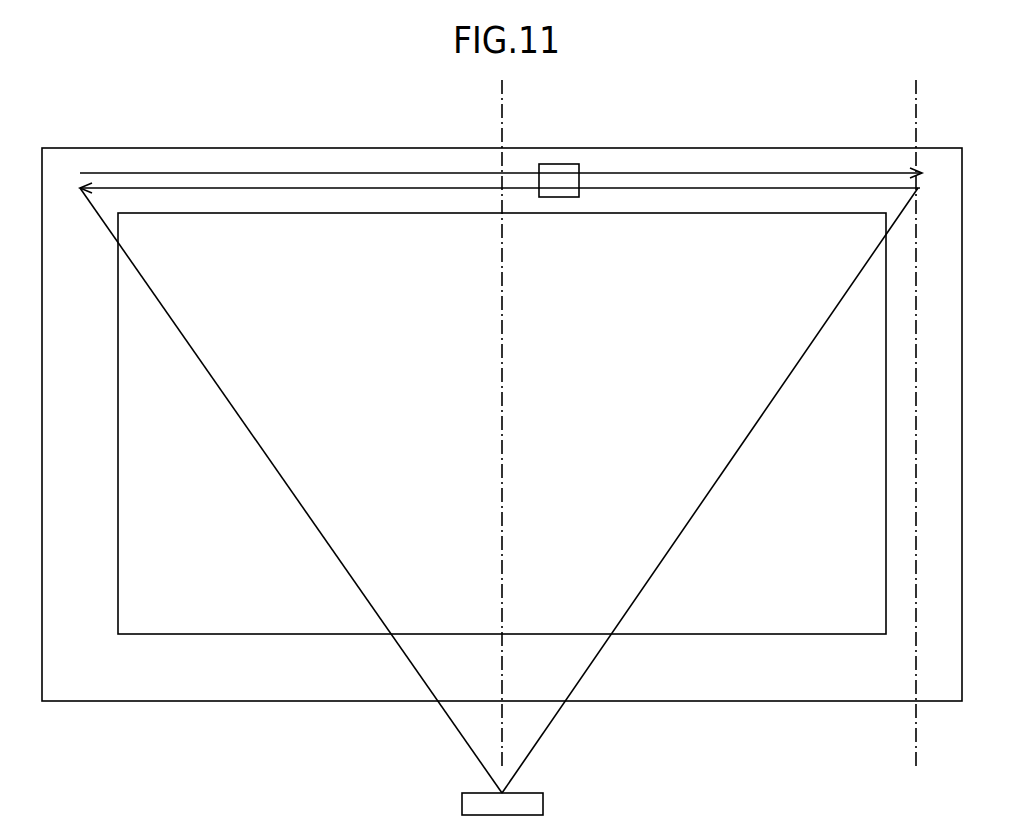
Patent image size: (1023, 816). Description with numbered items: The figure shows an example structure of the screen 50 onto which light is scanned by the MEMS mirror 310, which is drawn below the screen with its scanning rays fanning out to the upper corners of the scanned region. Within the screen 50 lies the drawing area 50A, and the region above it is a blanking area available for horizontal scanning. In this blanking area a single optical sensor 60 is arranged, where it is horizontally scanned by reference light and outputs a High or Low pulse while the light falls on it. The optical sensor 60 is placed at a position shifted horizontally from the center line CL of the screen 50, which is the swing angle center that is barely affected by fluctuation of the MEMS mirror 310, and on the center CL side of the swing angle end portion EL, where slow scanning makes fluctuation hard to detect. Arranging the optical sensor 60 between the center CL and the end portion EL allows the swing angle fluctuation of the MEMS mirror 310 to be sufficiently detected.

The screen 50 is at (928, 148).
The drawing area 50A is at (812, 634).
The optical sensor 60 is at (579, 163).
The MEMS mirror 310 is at (543, 800).
The center line CL is at (520, 424).
The end portion EL is at (933, 423).